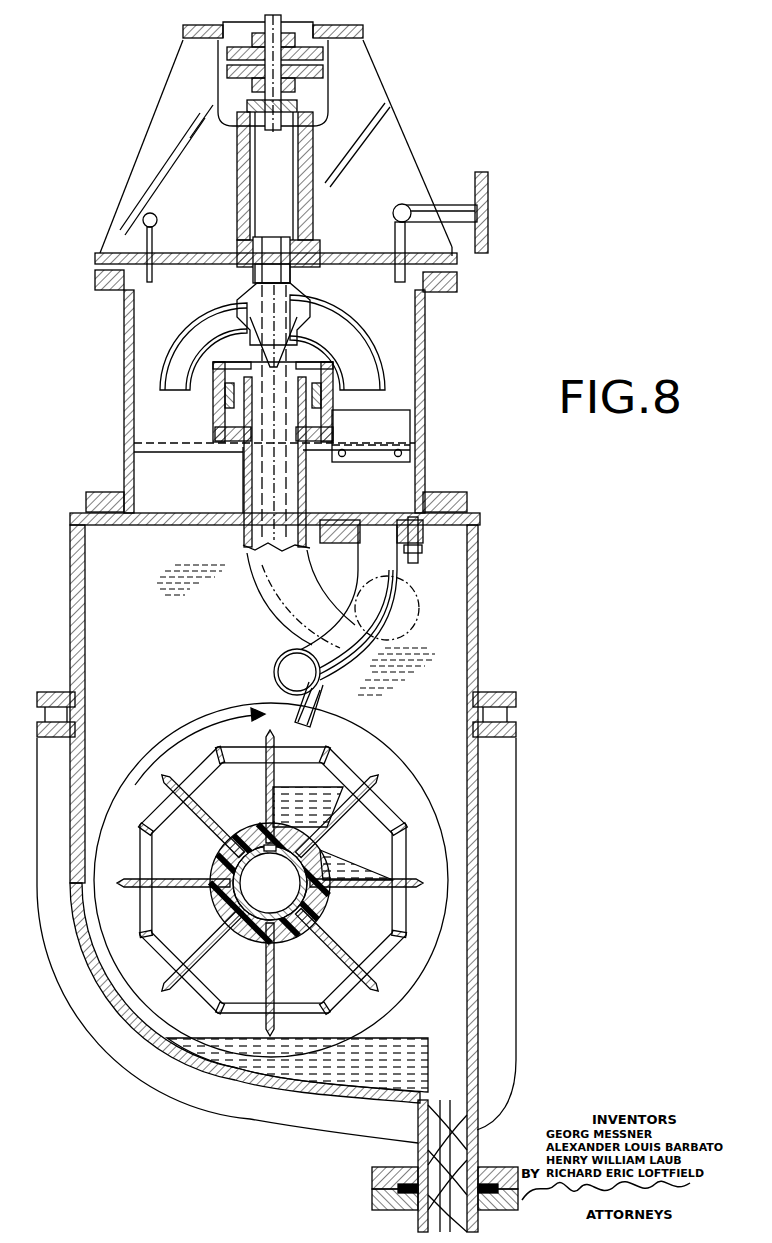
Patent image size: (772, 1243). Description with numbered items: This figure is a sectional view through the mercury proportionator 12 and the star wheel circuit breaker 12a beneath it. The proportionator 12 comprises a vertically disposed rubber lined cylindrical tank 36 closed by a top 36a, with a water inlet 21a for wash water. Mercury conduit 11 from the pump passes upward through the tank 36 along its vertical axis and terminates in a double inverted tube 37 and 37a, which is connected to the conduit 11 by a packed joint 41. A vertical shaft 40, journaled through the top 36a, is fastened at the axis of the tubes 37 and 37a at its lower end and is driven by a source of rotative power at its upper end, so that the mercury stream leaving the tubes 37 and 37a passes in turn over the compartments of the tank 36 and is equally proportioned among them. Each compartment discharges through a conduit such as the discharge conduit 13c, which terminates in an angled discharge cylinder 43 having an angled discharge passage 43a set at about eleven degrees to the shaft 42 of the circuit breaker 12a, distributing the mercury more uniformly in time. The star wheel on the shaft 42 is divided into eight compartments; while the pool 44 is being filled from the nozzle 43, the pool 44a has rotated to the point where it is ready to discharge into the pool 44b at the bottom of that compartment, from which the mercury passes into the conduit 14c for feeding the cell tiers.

The mercury conduit 11 is at (257, 478).
The mercury proportionator 12 is at (425, 365).
The star wheel circuit breaker 12a is at (435, 868).
The discharge conduit 13c is at (375, 513).
The conduit 14c is at (420, 1217).
The water inlet 21a is at (488, 200).
The cylindrical tank 36 is at (405, 383).
The top 36a is at (368, 253).
The inverted tube 37 is at (190, 330).
The inverted tube 37a is at (336, 305).
The vertical shaft 40 is at (267, 160).
The packed joint 41 is at (222, 405).
The shaft 42 is at (263, 847).
The angled discharge cylinder 43 is at (274, 672).
The angled discharge passage 43a is at (318, 706).
The pool 44 is at (333, 863).
The pool 44a is at (360, 867).
The pool 44b is at (428, 1040).